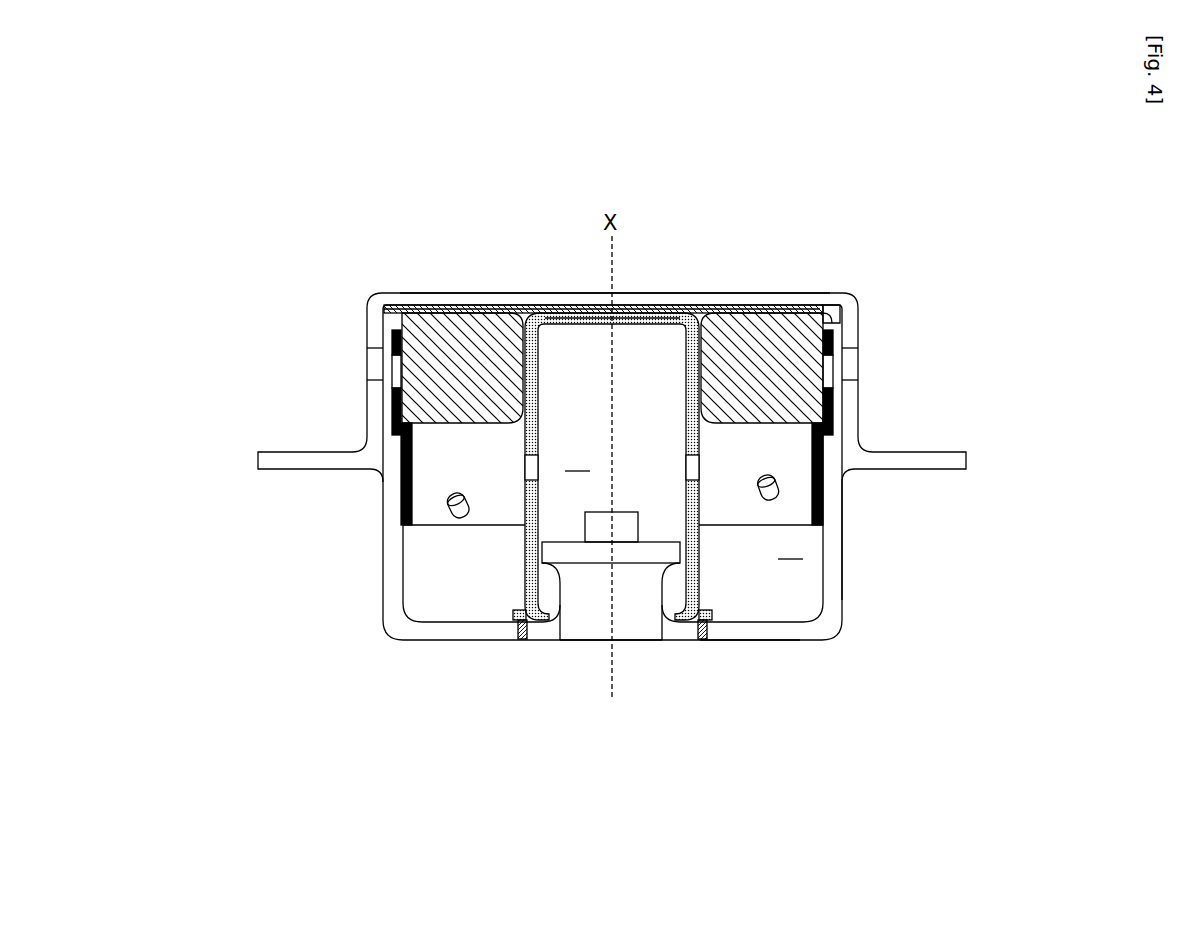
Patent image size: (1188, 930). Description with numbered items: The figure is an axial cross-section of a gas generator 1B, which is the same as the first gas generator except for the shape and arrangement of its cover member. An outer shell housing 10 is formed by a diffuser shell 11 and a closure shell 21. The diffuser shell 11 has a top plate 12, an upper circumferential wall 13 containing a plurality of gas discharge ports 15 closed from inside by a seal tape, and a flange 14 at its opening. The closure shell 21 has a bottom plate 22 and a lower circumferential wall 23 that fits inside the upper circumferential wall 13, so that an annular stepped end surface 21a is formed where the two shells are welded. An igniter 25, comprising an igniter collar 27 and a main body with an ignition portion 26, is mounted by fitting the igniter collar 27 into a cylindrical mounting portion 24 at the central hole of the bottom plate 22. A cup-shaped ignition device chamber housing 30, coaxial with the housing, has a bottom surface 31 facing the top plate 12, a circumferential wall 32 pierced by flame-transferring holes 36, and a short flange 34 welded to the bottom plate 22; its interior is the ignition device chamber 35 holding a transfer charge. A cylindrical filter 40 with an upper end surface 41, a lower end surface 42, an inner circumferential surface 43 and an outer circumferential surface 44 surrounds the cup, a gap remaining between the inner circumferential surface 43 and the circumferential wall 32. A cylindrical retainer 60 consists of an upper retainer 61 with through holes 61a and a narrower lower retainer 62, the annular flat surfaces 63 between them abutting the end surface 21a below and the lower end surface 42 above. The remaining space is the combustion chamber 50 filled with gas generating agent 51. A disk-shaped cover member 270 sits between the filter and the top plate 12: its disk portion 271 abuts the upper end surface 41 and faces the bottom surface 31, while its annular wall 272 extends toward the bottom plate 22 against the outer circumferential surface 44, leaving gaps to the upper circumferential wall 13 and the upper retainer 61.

The gas generator 1B is at (684, 289).
The outer shell housing 10 is at (1033, 428).
The diffuser shell 11 is at (870, 441).
The top plate 12 is at (486, 292).
The upper circumferential wall 13 is at (366, 300).
The flange 14 is at (272, 452).
The gas discharge ports 15 is at (374, 360).
The closure shell 21 is at (845, 494).
The end surface 21a is at (845, 422).
The bottom plate 22 is at (768, 641).
The lower circumferential wall 23 is at (843, 562).
The cylindrical mounting portion 24 is at (542, 632).
The igniter 25 is at (633, 652).
The ignition portion 26 is at (625, 520).
The igniter collar 27 is at (578, 630).
The cup-shaped ignition device chamber housing 30 is at (526, 573).
The bottom surface 31 is at (590, 322).
The circumferential wall 32 is at (700, 490).
The short flange 34 is at (712, 610).
The ignition device chamber 35 is at (578, 461).
The flame-transferring holes 36 is at (528, 470).
The cylindrical filter 40 is at (442, 430).
The upper end surface 41 is at (427, 312).
The lower end surface 42 is at (462, 424).
The inner circumferential surface 43 is at (680, 343).
The outer circumferential surface 44 is at (850, 330).
The combustion chamber 50 is at (613, 543).
The gas generating agent 51 is at (458, 514).
The cylindrical retainer 60 is at (215, 486).
The upper retainer 61 is at (390, 420).
The through holes 61a is at (396, 372).
The lower retainer 62 is at (400, 506).
The annular flat surfaces 63 is at (838, 380).
The disk-shaped cover member 270 is at (891, 220).
The disk portion 271 is at (766, 306).
The annular wall 272 is at (831, 314).